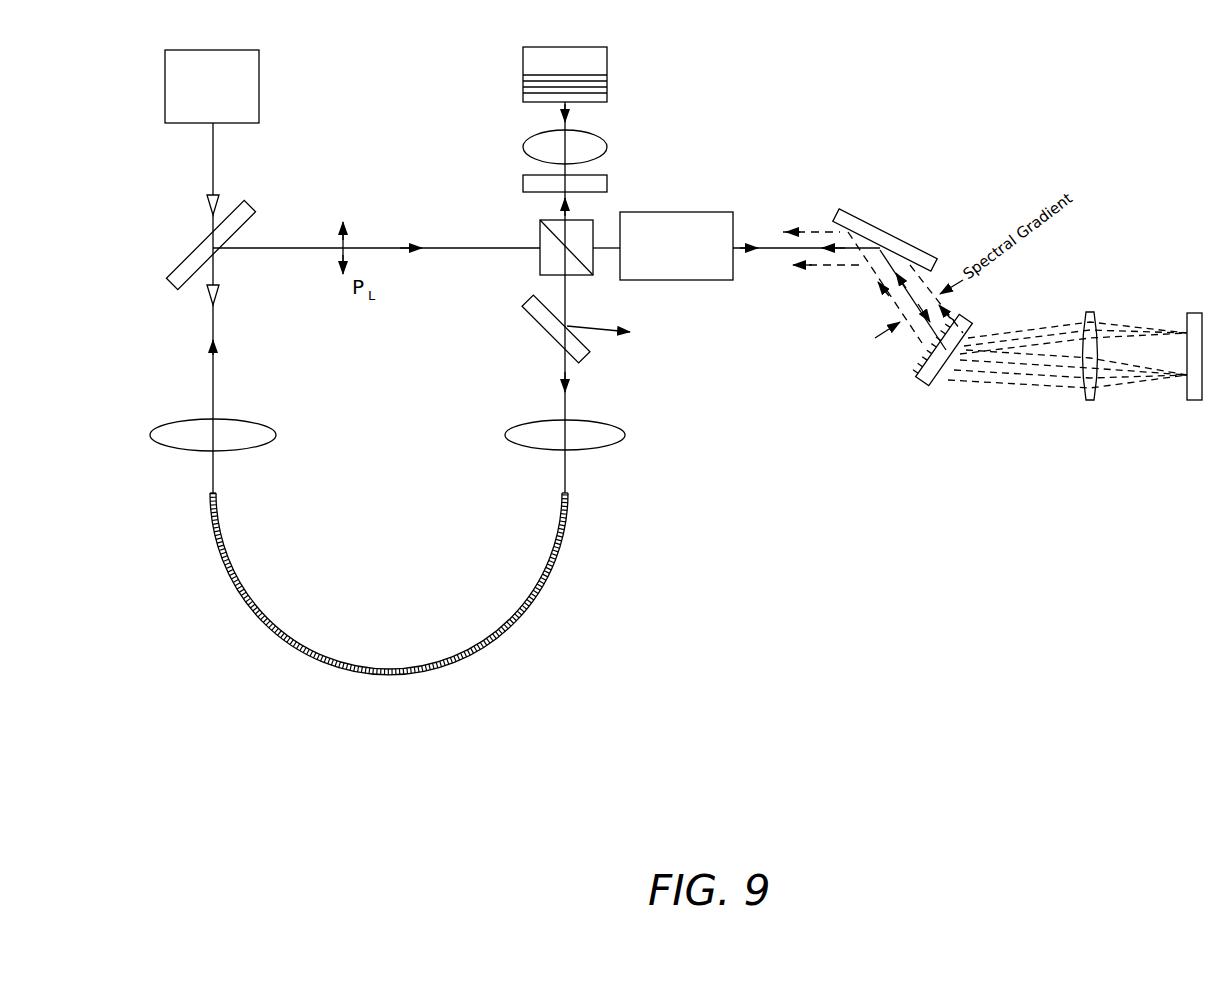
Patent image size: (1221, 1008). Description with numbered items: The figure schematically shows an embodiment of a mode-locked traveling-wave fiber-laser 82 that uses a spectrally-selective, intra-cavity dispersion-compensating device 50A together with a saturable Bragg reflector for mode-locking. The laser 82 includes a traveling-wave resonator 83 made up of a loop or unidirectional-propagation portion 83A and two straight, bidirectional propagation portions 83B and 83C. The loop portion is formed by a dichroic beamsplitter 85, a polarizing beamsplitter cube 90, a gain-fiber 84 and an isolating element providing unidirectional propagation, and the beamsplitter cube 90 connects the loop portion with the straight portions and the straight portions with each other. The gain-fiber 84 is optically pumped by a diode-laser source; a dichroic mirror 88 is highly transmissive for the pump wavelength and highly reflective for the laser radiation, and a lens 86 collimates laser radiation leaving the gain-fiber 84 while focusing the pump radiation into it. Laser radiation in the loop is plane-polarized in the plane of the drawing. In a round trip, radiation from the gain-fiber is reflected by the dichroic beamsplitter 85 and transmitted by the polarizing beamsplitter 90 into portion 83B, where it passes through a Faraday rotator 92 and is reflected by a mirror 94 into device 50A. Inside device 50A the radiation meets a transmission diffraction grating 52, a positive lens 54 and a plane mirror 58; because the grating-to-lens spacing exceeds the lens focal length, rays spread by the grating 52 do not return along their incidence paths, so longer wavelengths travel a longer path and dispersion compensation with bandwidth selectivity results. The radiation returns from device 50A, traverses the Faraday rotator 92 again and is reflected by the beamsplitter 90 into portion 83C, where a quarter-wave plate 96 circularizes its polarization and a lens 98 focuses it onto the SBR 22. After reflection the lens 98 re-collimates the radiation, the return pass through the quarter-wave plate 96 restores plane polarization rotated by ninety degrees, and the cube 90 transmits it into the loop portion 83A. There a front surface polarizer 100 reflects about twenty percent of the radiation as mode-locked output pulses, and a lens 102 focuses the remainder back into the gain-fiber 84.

The SBR 22 is at (518, 93).
The spectrally-selective intra-cavity dispersion-compensating device 50A is at (913, 420).
The transmission diffraction grating 52 is at (946, 388).
The positive lens 54 is at (1082, 397).
The plane mirror 58 is at (1182, 395).
The mode-locked traveling-wave fiber-laser 82 is at (853, 617).
The traveling-wave resonator 83 is at (705, 377).
The loop or unidirectional-propagation portion 83A is at (412, 446).
The straight or bidirectional propagation portion 83B is at (801, 218).
The straight or bidirectional propagation portion 83C is at (503, 168).
The gain-fiber 84 is at (518, 617).
The dichroic beamsplitter 85 is at (205, 207).
The lens 86 is at (259, 102).
The dichroic mirror 88 is at (240, 227).
The polarizing beamsplitter cube 90 is at (530, 237).
The Faraday rotator 92 is at (703, 278).
The mirror 94 is at (870, 233).
The quarter-wave plate 96 is at (608, 185).
The lens 98 is at (604, 148).
The front surface polarizer 100 is at (528, 319).
The lens 102 is at (600, 445).